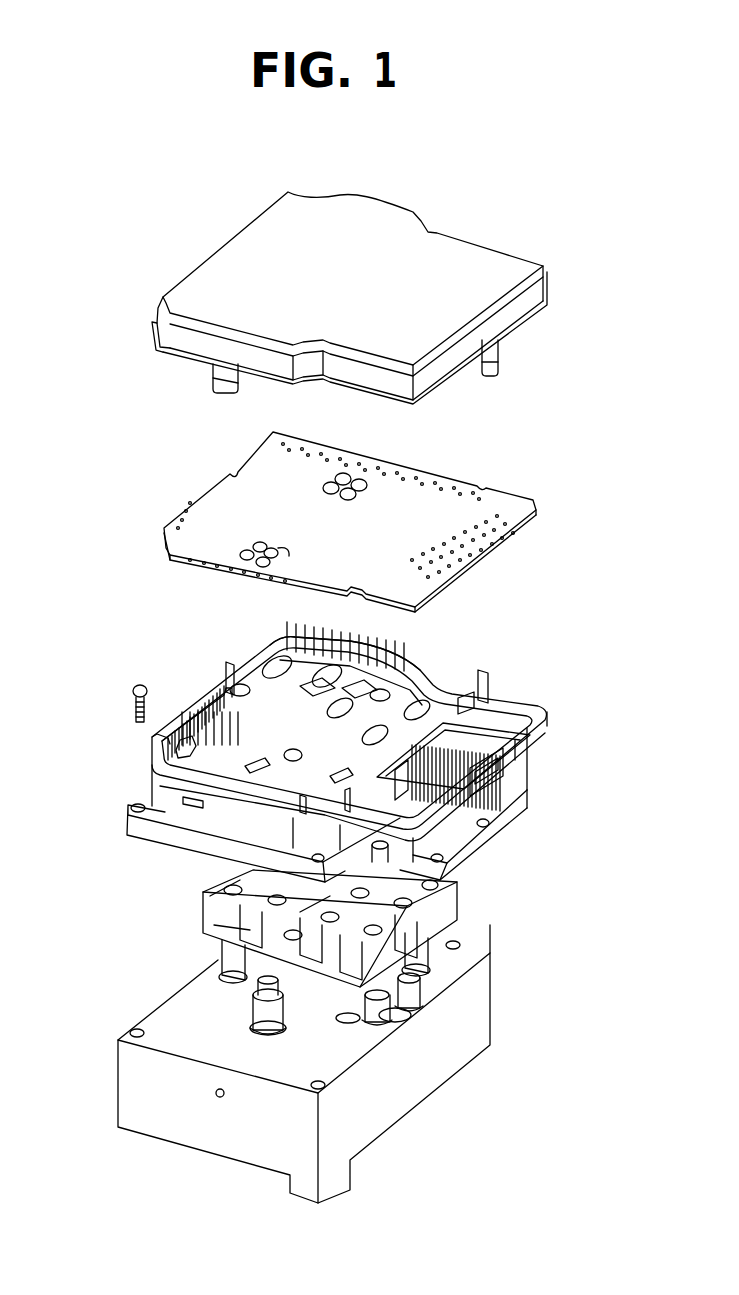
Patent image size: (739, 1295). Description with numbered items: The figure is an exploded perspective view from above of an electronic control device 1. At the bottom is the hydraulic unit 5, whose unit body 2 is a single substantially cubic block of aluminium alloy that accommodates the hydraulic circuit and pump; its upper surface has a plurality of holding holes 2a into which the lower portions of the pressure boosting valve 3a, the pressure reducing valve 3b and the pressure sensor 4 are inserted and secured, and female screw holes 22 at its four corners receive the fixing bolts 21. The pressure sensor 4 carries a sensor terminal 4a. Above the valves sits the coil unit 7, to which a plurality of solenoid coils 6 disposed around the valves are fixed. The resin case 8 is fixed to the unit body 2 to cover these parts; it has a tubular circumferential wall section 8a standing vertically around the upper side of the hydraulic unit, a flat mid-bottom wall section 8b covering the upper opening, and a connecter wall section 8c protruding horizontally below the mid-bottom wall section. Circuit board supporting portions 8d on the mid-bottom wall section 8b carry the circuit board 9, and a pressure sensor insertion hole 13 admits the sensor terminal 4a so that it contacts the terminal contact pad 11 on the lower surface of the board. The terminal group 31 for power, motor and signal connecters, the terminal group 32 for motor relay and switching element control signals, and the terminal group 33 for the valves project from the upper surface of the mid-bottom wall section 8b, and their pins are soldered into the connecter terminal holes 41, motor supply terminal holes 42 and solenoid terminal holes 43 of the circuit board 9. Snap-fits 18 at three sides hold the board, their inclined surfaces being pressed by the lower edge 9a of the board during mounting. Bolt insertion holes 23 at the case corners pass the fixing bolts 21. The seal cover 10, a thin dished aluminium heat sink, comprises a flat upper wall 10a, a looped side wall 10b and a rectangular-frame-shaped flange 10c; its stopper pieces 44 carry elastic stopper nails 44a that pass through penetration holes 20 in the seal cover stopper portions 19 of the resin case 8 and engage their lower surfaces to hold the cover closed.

The electronic control device 1 is at (98, 333).
The unit body 2 is at (160, 1020).
The holding hole 2a is at (400, 980).
The pressure boosting valve 3a is at (385, 1025).
The pressure reducing valve 3b is at (390, 1020).
The pressure sensor 4 is at (260, 1012).
The sensor terminal 4a is at (230, 957).
The hydraulic unit 5 is at (110, 1063).
The solenoid coil 6 is at (215, 918).
The coil unit 7 is at (195, 893).
The resin case 8 is at (146, 768).
The circumferential wall section 8a is at (152, 795).
The mid-bottom wall section 8b is at (200, 735).
The connecter wall section 8c is at (460, 835).
The circuit board supporting portion 8d is at (464, 683).
The circuit board 9 is at (197, 488).
The lower edge 9a is at (383, 534).
The seal cover 10 is at (200, 232).
The upper wall 10a is at (478, 258).
The side wall 10b is at (522, 308).
The flange 10c is at (530, 320).
The terminal contact pad 11 is at (245, 562).
The pressure sensor insertion hole 13 is at (290, 760).
The snap-fit 18 is at (230, 665).
The seal cover stopper portion 19 is at (497, 790).
The penetration hole 20 is at (490, 772).
The fixing bolt 21 is at (133, 693).
The female screw hole 22 is at (455, 945).
The bolt insertion hole 23 is at (131, 808).
The terminal group 31 is at (520, 705).
The terminal group 32 is at (150, 735).
The terminal group 33 is at (380, 650).
The connecter terminal hole 41 is at (480, 520).
The motor supply terminal hole 42 is at (352, 480).
The solenoid terminal hole 43 is at (275, 436).
The stopper piece 44 is at (222, 390).
The stopper nail 44a is at (213, 385).